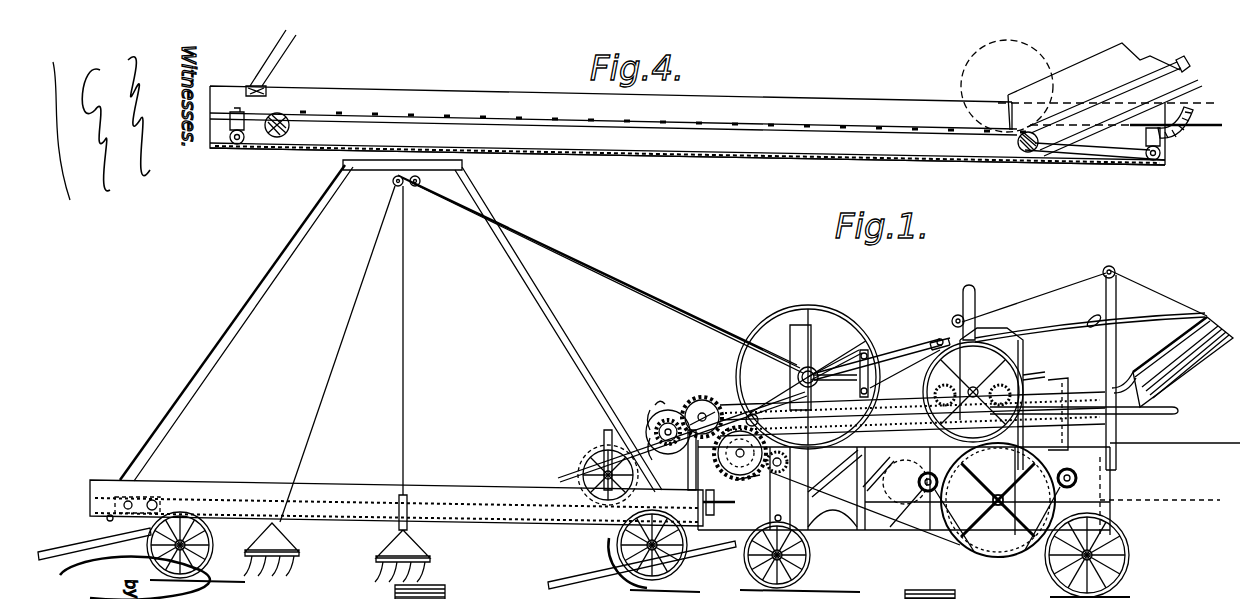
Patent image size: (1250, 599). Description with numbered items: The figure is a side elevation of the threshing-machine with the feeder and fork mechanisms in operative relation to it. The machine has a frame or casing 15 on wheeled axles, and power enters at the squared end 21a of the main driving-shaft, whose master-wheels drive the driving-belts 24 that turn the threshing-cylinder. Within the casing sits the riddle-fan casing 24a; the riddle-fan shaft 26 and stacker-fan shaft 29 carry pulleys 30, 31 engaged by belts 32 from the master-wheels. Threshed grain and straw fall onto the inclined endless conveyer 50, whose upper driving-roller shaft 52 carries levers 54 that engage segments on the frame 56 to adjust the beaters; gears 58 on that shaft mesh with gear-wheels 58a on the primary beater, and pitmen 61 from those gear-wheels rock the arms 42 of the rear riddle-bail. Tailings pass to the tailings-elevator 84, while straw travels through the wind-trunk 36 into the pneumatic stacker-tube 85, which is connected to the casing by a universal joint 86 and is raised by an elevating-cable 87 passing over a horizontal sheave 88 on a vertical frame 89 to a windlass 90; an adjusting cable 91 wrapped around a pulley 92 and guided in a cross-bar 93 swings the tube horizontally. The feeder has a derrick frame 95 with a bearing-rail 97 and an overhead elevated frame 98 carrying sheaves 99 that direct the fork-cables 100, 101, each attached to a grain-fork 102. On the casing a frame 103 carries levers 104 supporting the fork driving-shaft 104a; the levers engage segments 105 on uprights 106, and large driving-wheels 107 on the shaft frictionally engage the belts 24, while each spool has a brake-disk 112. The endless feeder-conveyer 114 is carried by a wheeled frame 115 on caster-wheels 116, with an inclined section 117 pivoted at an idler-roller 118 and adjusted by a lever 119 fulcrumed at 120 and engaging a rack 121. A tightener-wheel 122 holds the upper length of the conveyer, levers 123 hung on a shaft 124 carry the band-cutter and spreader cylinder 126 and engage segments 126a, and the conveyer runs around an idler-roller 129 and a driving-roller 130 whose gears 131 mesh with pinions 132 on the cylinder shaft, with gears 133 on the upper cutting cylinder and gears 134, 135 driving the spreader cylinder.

In FIG. 1, the frame or casing 15 is at (998, 500).
In FIG. 1, the squared end of main driving-shaft 21a is at (1000, 495).
In FIG. 1, the driving-belts 24 is at (876, 525).
In FIG. 1, the casing of riddle-fan 24a is at (865, 501).
In FIG. 1, the riddle-fan shaft 26 is at (921, 483).
In FIG. 1, the stacker-fan shaft 29 is at (1078, 480).
In FIG. 1, the pulley on riddle-fan shaft 30 is at (940, 516).
In FIG. 1, the pulley on stacker-fan shaft 31 is at (1160, 496).
In FIG. 1, the belts 32 is at (905, 481).
In FIG. 1, the wind-trunk 36 is at (1177, 455).
In FIG. 1, the arms of rear riddle-bail 42 is at (1067, 414).
In FIG. 1, the inclined endless conveyer 50 is at (835, 480).
In FIG. 1, the shaft of driving-roller 52 is at (943, 388).
In FIG. 1, the levers 54 is at (1035, 368).
In FIG. 1, the frame of machine-casing 56 is at (1023, 360).
In FIG. 1, the gears 58 is at (973, 392).
In FIG. 1, the gear-wheels 58a is at (1004, 395).
In FIG. 1, the pitmen 61 is at (1062, 383).
In FIG. 1, the tailings-elevator 84 is at (890, 420).
In FIG. 1, the pneumatic stacker-tube 85 is at (1190, 328).
In FIG. 1, the universal joint or knuckle 86 is at (1168, 404).
In FIG. 1, the elevating-cable 87 is at (1150, 292).
In FIG. 1, the horizontal sheave 88 is at (1113, 268).
In FIG. 1, the vertical frame 89 is at (1116, 346).
In FIG. 1, the windlass 90 is at (1018, 306).
In FIG. 1, the adjusting cable 91 is at (1060, 322).
In FIG. 1, the pulley 92 is at (931, 334).
In FIG. 1, the cross-bar 93 is at (1092, 327).
In FIG. 4, the feeder frame 95 is at (876, 110).
In FIG. 1, the feeder frame 95 is at (250, 490).
In FIG. 4, the bearing-rail or bottom 97 is at (570, 150).
In FIG. 1, the overhead elevated frame 98 is at (391, 326).
In FIG. 1, the sheaves 99 is at (416, 188).
In FIG. 1, the fork-cable 100 is at (505, 225).
In FIG. 1, the fork-cable 101 is at (531, 238).
In FIG. 1, the grain-fork 102 is at (295, 547).
In FIG. 1, the frame 103 is at (790, 334).
In FIG. 1, the levers 104 is at (905, 346).
In FIG. 1, the driving-shaft of fork mechanism 104a is at (789, 375).
In FIG. 1, the segments 105 is at (842, 355).
In FIG. 1, the uprights 106 is at (872, 350).
In FIG. 1, the driving-wheels 107 is at (395, 590).
In FIG. 1, the brake-disk 112 is at (835, 383).
In FIG. 4, the endless feeder-conveyer 114 is at (497, 112).
In FIG. 4, the wheeled feeder-frame 115 is at (270, 112).
In FIG. 4, the caster-wheels 116 is at (232, 146).
In FIG. 1, the caster-wheels 116 is at (118, 518).
In FIG. 4, the inclined adjustable section 117 is at (1185, 72).
In FIG. 1, the inclined adjustable section 117 is at (688, 462).
In FIG. 4, the idler-roller 118 is at (1022, 156).
In FIG. 4, the lever 119 is at (1183, 115).
In FIG. 1, the lever 119 is at (724, 508).
In FIG. 4, the fulcrum 120 is at (1190, 92).
In FIG. 4, the rack or segment 121 is at (1188, 140).
In FIG. 1, the rack or segment 121 is at (723, 511).
In FIG. 4, the tightener-wheel 122 is at (967, 92).
In FIG. 1, the tightener-wheel 122 is at (585, 468).
In FIG. 1, the levers 123 is at (570, 476).
In FIG. 1, the shaft 124 is at (702, 398).
In FIG. 1, the band-cutter and spreader cylinder 126 is at (668, 410).
In FIG. 1, the segments 126a is at (610, 426).
In FIG. 4, the idler-roller 129 is at (283, 118).
In FIG. 1, the idler-roller 129 is at (158, 500).
In FIG. 1, the driving-roller 130 is at (740, 453).
In FIG. 1, the gears 131 is at (742, 471).
In FIG. 1, the gear-pinions 132 is at (788, 461).
In FIG. 1, the gears 133 is at (752, 412).
In FIG. 1, the gears 134 is at (704, 412).
In FIG. 1, the gears 135 is at (665, 420).